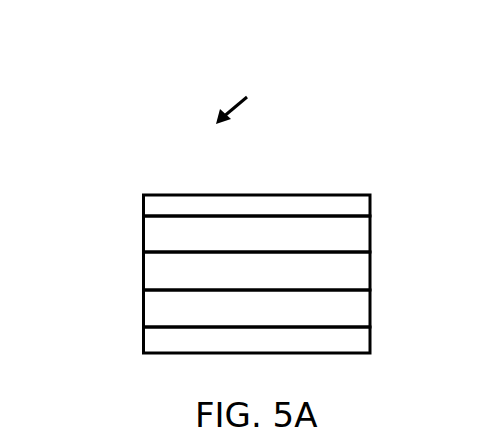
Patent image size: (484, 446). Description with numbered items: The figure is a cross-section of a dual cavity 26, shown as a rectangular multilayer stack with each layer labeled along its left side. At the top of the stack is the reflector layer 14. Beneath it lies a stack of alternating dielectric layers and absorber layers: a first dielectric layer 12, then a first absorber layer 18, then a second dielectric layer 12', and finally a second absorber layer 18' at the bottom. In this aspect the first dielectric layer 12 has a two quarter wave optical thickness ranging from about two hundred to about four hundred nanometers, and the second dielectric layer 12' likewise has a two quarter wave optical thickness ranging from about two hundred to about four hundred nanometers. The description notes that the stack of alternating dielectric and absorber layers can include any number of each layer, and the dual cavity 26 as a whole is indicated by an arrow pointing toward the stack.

The dual cavity 26 is at (243, 101).
The reflector layer 14 is at (143, 206).
The first dielectric layer 12 is at (228, 234).
The first absorber layer 18 is at (228, 271).
The second dielectric layer 12' is at (227, 308).
The second absorber layer 18' is at (229, 342).